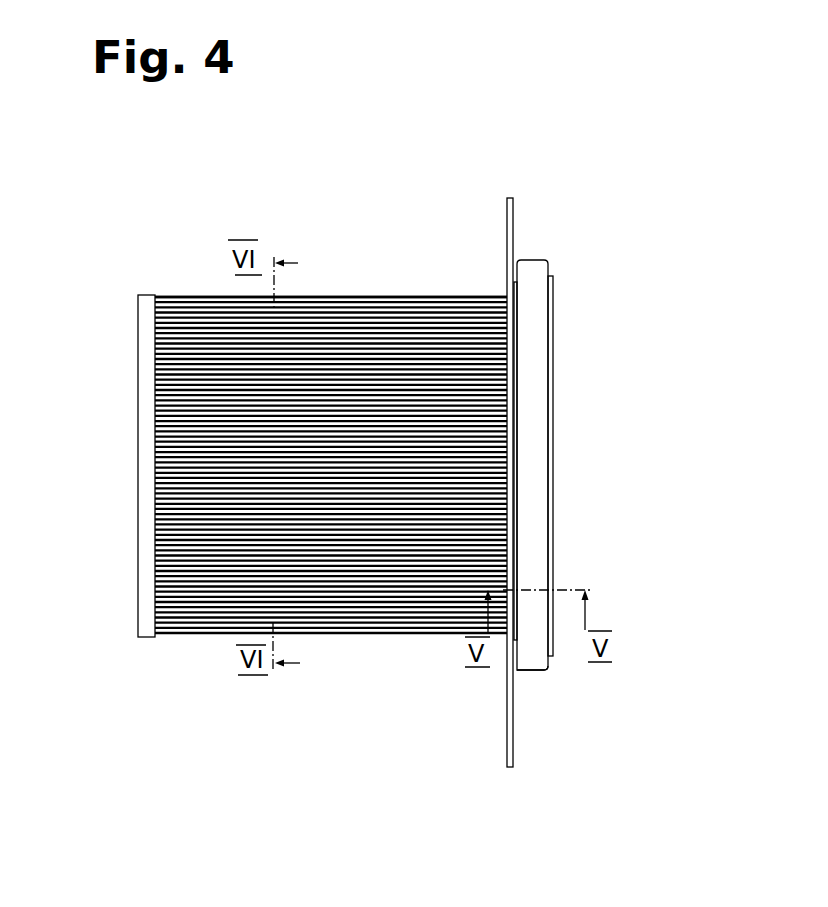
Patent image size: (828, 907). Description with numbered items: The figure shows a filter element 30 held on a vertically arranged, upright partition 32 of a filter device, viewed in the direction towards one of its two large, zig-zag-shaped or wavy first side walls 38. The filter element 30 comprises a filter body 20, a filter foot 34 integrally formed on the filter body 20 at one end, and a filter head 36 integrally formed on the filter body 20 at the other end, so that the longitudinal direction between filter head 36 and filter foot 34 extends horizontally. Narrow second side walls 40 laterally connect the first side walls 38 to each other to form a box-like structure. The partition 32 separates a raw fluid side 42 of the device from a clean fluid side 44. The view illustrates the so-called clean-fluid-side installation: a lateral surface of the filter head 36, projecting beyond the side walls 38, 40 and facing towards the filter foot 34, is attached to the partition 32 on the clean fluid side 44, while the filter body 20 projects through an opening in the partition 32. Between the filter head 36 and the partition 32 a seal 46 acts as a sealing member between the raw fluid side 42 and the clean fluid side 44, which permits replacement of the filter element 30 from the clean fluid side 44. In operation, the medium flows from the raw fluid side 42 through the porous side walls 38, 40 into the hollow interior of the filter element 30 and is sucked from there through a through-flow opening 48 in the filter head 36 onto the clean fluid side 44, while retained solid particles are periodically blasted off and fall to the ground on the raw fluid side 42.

The filter body 20 is at (202, 305).
The filter element 30 is at (392, 284).
The partition 32 is at (522, 206).
The filter foot 34 is at (140, 342).
The filter head 36 is at (537, 657).
The first side walls 38 is at (193, 528).
The second side walls 40 is at (220, 633).
The raw fluid side 42 is at (395, 165).
The clean fluid side 44 is at (685, 403).
The seal 46 is at (517, 295).
The through-flow opening 48 is at (555, 458).